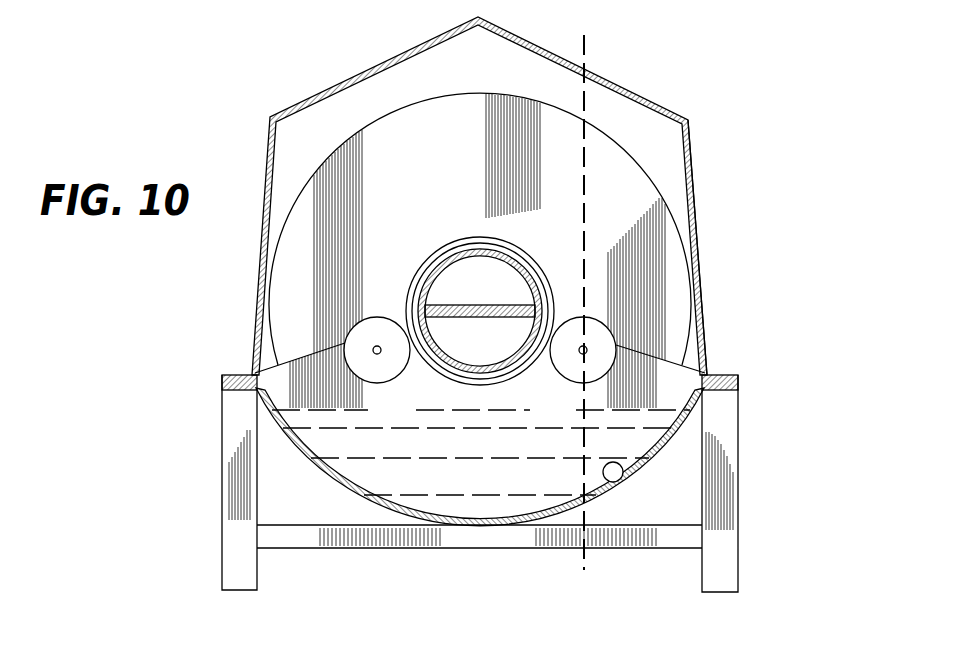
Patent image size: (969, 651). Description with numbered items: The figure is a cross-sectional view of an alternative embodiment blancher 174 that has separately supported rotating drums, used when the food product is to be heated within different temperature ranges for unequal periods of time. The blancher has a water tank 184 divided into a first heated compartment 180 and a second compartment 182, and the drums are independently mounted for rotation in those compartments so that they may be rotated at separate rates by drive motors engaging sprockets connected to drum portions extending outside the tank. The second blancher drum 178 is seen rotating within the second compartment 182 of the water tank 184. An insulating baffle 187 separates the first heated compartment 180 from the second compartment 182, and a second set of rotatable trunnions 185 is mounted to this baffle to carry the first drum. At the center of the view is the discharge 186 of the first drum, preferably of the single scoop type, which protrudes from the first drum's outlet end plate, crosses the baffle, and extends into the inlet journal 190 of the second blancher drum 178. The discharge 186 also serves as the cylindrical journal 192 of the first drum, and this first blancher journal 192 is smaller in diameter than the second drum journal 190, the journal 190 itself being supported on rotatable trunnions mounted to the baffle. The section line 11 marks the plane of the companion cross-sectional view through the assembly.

The section line 11 is at (608, 580).
The alternative embodiment blancher 174 is at (735, 120).
The second blancher drum 178 is at (683, 244).
The first heated compartment 180 is at (616, 482).
The second compartment 182 is at (708, 352).
The water tank 184 is at (312, 455).
The rotatable trunnions 185 is at (392, 380).
The discharge 186 is at (517, 252).
The insulating baffle 187 is at (311, 352).
The inlet journal 190 is at (462, 237).
The cylindrical journal 192 is at (544, 274).